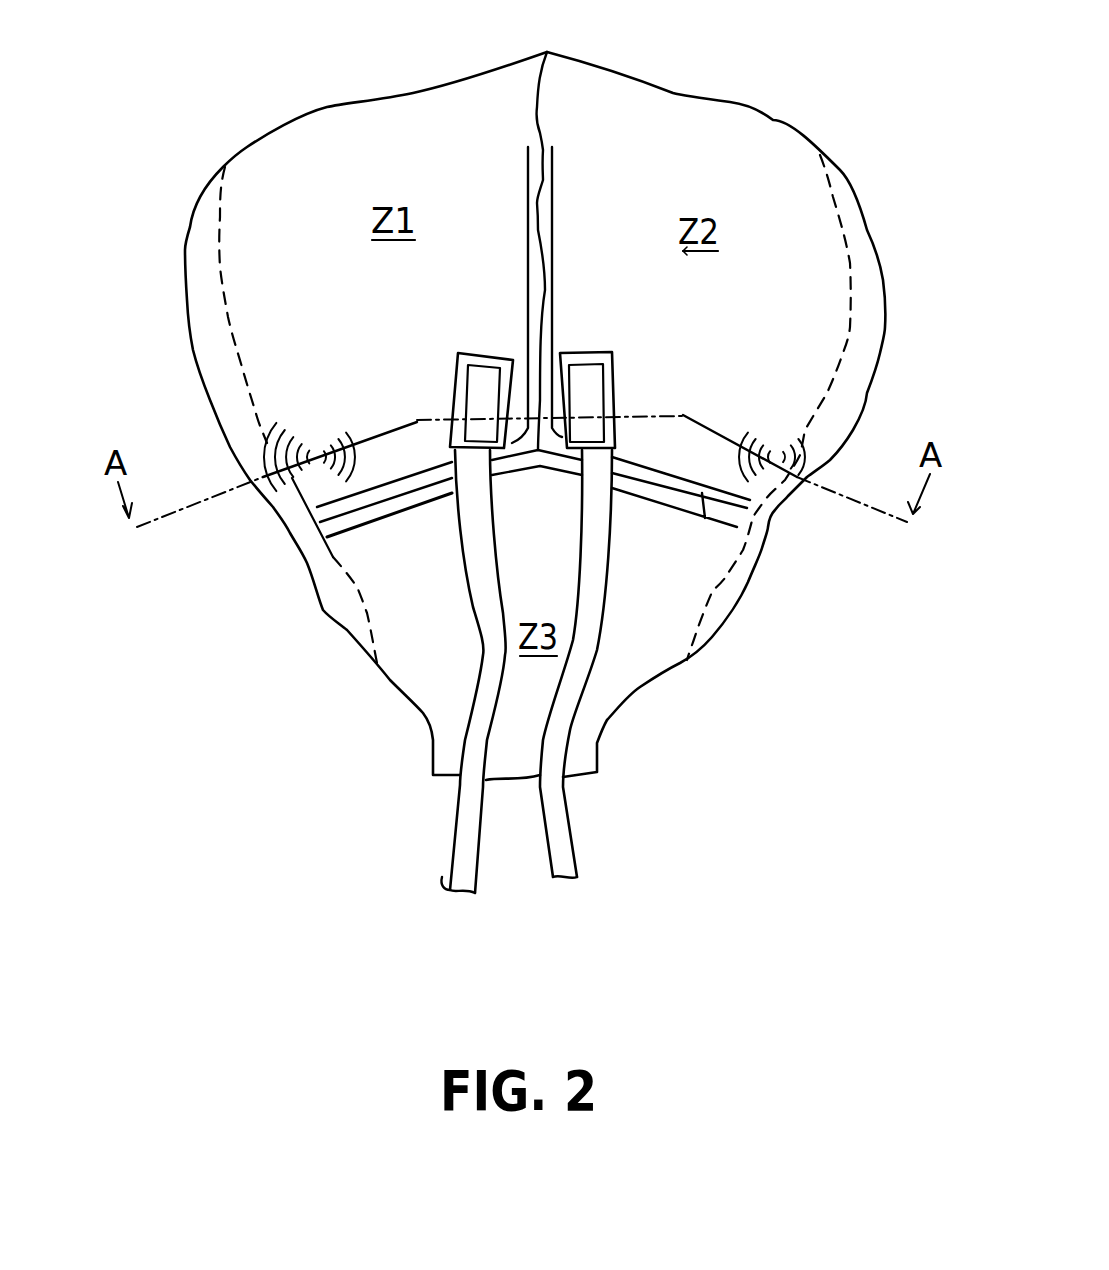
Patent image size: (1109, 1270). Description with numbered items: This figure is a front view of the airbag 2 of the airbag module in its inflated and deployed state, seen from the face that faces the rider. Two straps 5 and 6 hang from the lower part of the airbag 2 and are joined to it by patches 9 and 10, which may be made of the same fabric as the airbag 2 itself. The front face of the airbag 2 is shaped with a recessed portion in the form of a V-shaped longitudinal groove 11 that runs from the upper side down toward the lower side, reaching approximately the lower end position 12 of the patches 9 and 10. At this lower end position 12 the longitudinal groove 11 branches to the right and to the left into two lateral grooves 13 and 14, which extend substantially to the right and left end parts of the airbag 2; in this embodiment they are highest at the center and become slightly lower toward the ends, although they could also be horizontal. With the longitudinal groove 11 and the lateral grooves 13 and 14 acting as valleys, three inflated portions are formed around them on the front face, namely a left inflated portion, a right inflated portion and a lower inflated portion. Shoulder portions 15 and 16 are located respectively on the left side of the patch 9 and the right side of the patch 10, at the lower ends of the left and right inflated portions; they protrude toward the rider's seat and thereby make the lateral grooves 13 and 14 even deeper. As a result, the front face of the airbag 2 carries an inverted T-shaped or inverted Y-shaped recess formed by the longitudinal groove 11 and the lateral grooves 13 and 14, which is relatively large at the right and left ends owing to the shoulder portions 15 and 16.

The airbag 2 is at (728, 132).
The strap 5 is at (465, 840).
The strap 6 is at (563, 847).
The patch 9 is at (456, 383).
The patch 10 is at (620, 374).
The longitudinal groove 11 is at (545, 290).
The lower end position 12 is at (540, 467).
The lateral groove 13 is at (383, 503).
The lateral groove 14 is at (705, 518).
The shoulder portion 15 is at (277, 513).
The shoulder portion 16 is at (805, 492).